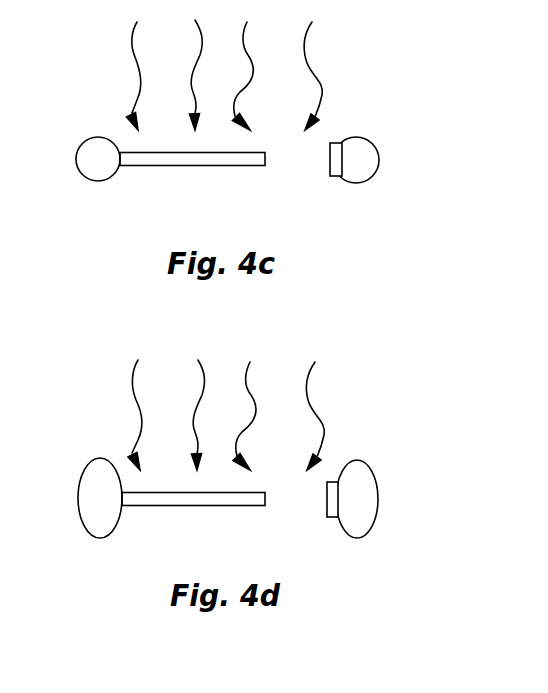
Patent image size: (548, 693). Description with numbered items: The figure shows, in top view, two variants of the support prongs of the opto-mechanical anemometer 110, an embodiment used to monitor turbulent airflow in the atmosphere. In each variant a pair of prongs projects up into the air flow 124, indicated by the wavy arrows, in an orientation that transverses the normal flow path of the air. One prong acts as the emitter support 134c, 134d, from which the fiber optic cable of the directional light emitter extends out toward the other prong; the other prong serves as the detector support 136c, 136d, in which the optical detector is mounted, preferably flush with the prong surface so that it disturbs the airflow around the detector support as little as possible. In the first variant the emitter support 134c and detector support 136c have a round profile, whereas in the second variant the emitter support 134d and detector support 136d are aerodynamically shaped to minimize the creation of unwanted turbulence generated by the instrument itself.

In FIG. 4C, the air flow 124 is at (134, 58).
In FIG. 4D, the air flow 124 is at (134, 398).
In FIG. 4C, the emitter support 134c is at (82, 177).
In FIG. 4C, the detector support 136c is at (375, 170).
In FIG. 4D, the emitter support 134d is at (83, 527).
In FIG. 4D, the detector support 136d is at (377, 479).
In FIG. 4D, the opto-mechanical anemometer 110 is at (335, 691).